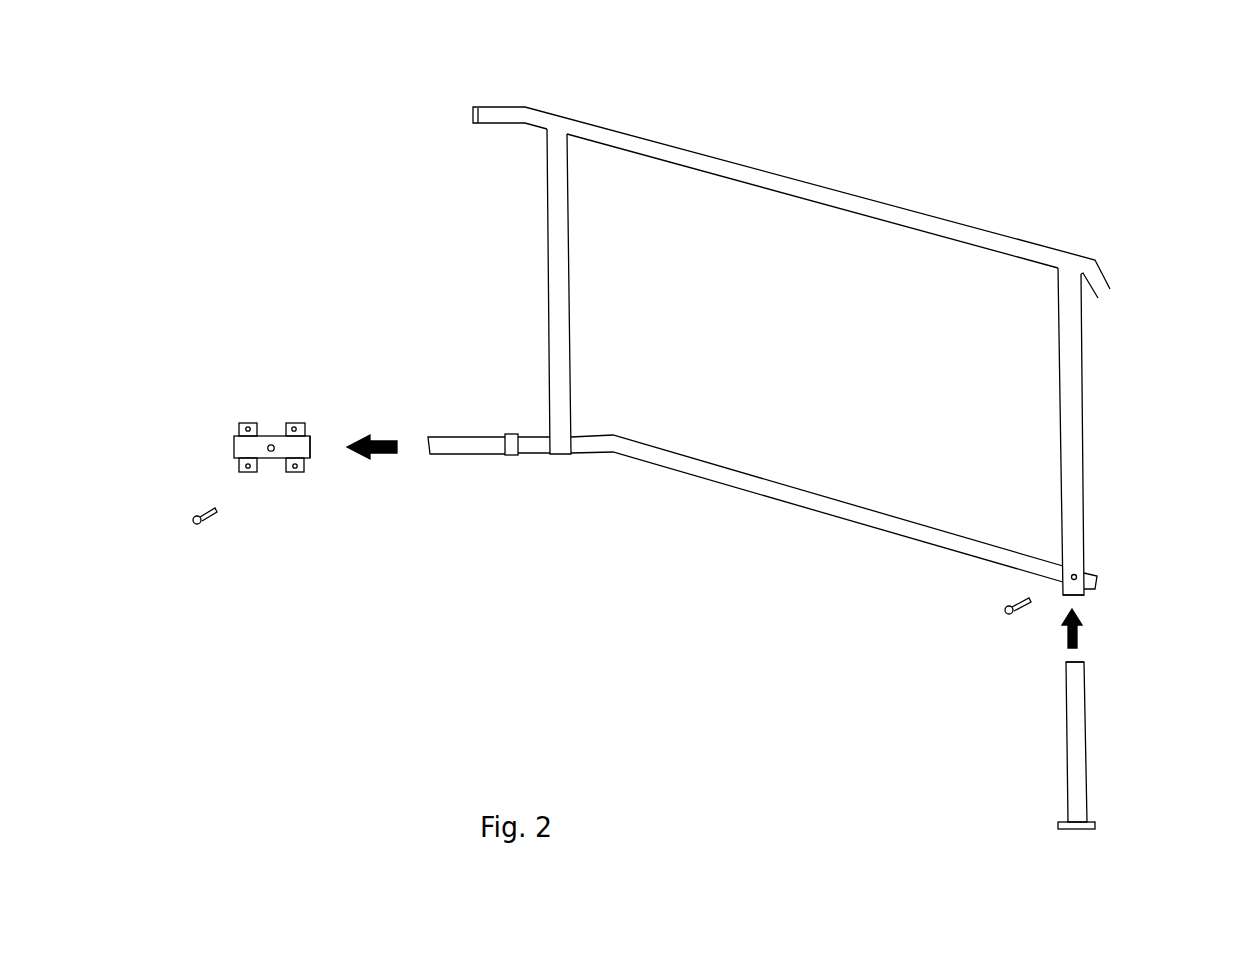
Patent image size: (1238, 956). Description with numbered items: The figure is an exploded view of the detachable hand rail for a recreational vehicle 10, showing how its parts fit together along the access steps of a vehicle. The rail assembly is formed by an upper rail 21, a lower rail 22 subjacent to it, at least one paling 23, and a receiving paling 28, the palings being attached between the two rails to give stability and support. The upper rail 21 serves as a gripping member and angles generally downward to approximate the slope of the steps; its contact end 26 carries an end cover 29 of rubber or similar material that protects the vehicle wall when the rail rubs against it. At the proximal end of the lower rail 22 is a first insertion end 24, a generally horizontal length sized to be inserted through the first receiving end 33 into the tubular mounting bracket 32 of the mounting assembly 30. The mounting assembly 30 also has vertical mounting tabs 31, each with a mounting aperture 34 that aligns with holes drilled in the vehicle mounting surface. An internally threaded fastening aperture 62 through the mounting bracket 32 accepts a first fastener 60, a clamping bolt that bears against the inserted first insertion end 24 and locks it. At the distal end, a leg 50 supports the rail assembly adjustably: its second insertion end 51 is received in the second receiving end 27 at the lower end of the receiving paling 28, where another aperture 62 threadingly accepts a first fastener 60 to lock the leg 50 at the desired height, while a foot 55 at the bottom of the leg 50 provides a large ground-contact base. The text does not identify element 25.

The detachable hand rail for a recreational vehicle 10 is at (1152, 178).
The upper rail 21 is at (767, 178).
The lower rail 22 is at (703, 468).
The paling 23 is at (560, 283).
The first insertion end 24 is at (435, 453).
The collar 25 is at (507, 437).
The contact end 26 is at (493, 120).
The second receiving end 27 is at (1086, 597).
The receiving paling 28 is at (1074, 382).
The end cover 29 is at (474, 113).
The mounting assembly 30 is at (216, 440).
The mounting tab 31 is at (249, 426).
The mounting bracket 32 is at (270, 436).
The first receiving end 33 is at (312, 440).
The mounting aperture 34 is at (241, 424).
The leg 50 is at (1072, 740).
The second insertion end 51 is at (1067, 667).
The foot 55 is at (1065, 823).
The first fastener 60 is at (1020, 602).
The fastening aperture 62 is at (1079, 575).